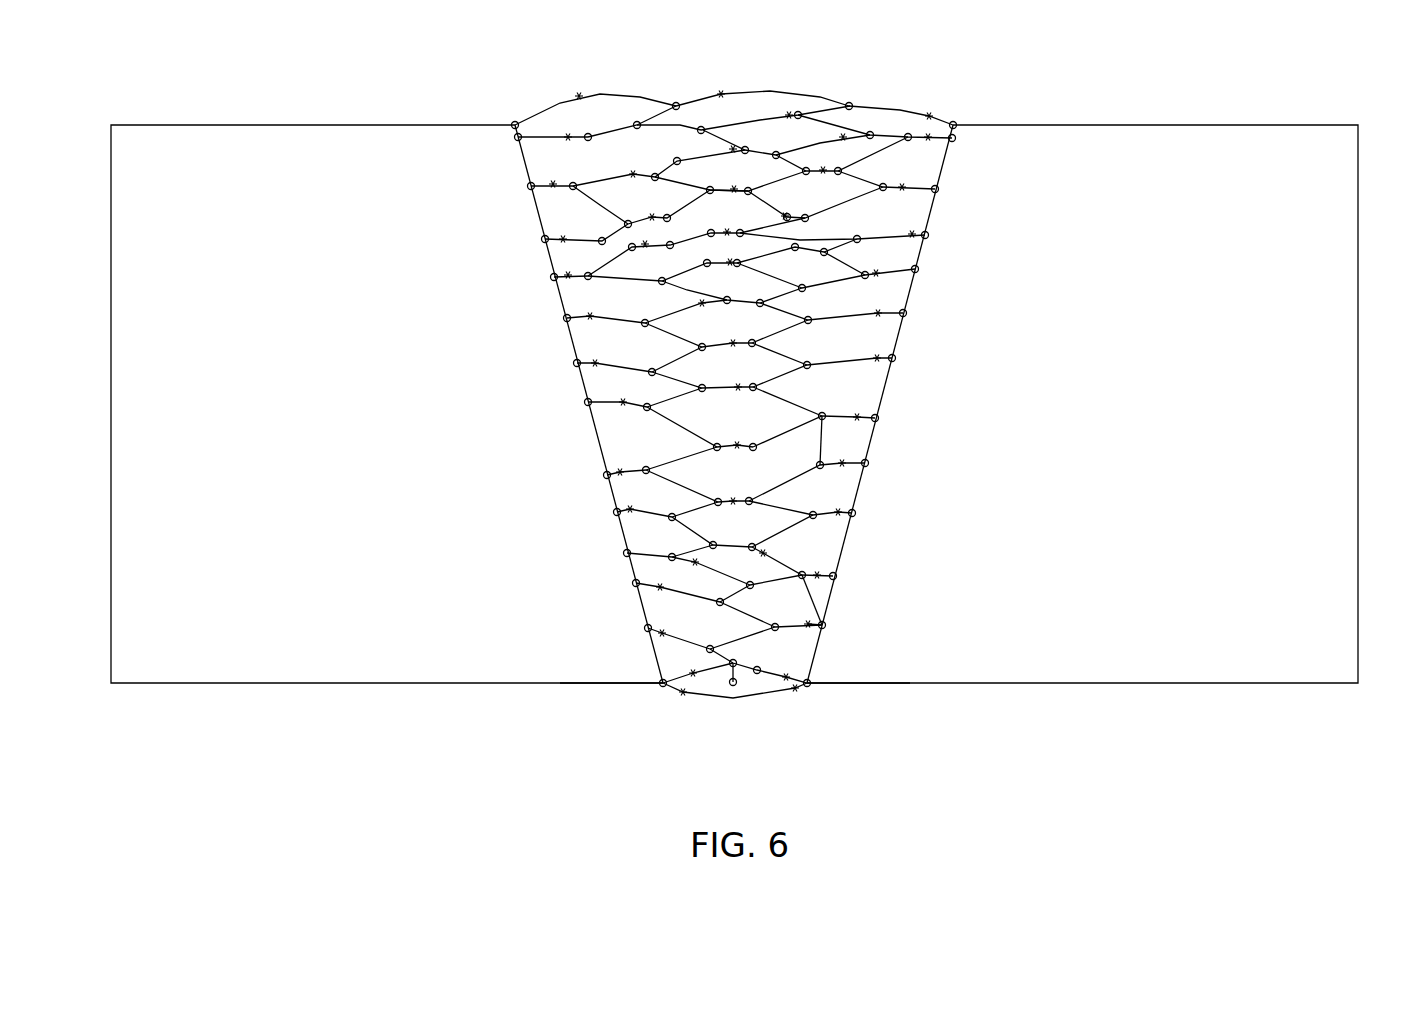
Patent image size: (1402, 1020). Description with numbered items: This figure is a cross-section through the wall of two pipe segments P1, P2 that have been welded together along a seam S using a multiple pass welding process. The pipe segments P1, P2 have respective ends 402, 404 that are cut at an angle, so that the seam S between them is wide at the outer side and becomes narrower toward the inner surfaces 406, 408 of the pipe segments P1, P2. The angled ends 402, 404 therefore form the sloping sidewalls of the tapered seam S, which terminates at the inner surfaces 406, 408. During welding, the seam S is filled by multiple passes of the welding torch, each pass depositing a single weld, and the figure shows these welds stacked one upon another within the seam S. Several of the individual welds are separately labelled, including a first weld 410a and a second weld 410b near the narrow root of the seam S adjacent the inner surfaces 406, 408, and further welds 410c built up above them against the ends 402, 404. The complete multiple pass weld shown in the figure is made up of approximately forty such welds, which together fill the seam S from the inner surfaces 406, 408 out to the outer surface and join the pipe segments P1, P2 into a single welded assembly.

The pipe segment P1 is at (298, 143).
The pipe segment P2 is at (1170, 143).
The seam S is at (653, 60).
The end 402 is at (537, 218).
The end 404 is at (930, 218).
The inner surface 406 is at (587, 685).
The inner surface 408 is at (882, 685).
The weld 410a is at (670, 663).
The weld 410b is at (800, 663).
The weld 410c is at (662, 607).